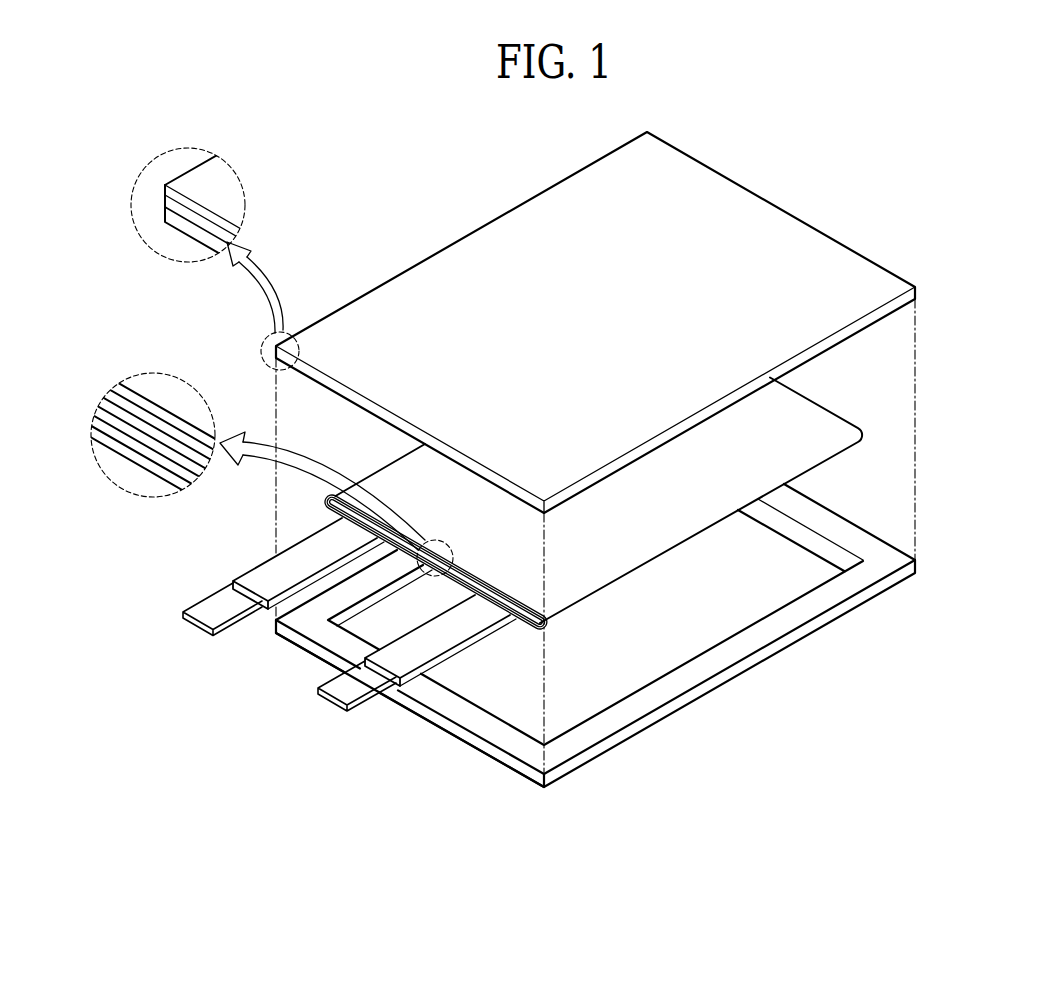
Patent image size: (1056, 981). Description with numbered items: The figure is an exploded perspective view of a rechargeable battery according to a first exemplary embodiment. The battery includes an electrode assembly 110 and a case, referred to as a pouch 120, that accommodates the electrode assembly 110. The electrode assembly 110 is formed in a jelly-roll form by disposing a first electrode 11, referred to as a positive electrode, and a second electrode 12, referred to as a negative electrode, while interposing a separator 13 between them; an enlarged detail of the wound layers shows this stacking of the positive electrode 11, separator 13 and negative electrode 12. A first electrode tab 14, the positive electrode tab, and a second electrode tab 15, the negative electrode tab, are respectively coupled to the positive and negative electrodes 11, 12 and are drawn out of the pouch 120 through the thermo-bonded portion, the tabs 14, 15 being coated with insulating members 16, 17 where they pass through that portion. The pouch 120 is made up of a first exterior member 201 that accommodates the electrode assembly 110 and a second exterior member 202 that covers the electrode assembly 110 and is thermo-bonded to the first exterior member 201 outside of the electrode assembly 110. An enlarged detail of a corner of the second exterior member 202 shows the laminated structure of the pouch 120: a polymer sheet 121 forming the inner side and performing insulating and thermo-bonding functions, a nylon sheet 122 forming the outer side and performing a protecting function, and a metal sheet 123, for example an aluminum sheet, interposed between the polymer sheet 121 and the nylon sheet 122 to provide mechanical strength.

The electrode assembly 110 is at (697, 550).
The pouch 120 is at (658, 459).
The first exterior member 201 is at (868, 538).
The second exterior member 202 is at (877, 317).
The polymer sheet 121 is at (178, 225).
The nylon sheet 122 is at (165, 186).
The metal sheet 123 is at (165, 201).
The first electrode 11 is at (130, 437).
The second electrode 12 is at (153, 418).
The separator 13 is at (178, 445).
The first electrode tab 14 is at (228, 610).
The second electrode tab 15 is at (363, 688).
The insulating member 16 is at (298, 557).
The insulating member 17 is at (440, 648).